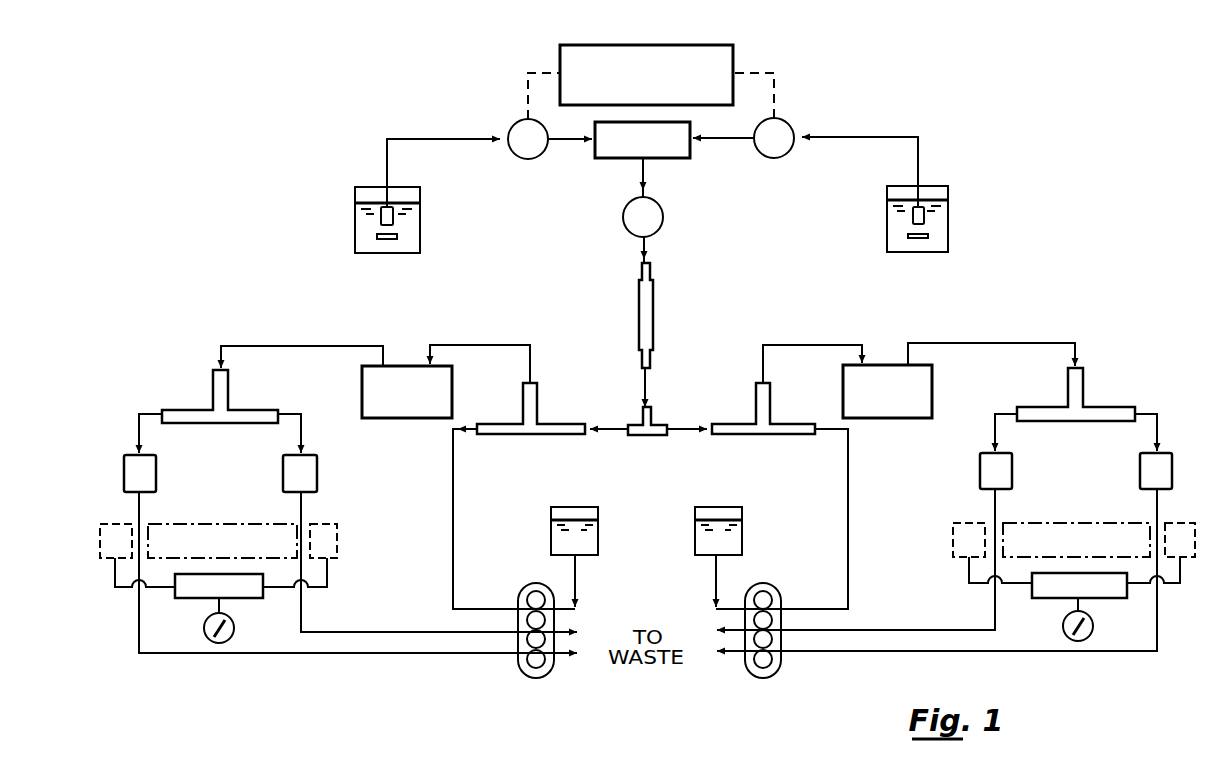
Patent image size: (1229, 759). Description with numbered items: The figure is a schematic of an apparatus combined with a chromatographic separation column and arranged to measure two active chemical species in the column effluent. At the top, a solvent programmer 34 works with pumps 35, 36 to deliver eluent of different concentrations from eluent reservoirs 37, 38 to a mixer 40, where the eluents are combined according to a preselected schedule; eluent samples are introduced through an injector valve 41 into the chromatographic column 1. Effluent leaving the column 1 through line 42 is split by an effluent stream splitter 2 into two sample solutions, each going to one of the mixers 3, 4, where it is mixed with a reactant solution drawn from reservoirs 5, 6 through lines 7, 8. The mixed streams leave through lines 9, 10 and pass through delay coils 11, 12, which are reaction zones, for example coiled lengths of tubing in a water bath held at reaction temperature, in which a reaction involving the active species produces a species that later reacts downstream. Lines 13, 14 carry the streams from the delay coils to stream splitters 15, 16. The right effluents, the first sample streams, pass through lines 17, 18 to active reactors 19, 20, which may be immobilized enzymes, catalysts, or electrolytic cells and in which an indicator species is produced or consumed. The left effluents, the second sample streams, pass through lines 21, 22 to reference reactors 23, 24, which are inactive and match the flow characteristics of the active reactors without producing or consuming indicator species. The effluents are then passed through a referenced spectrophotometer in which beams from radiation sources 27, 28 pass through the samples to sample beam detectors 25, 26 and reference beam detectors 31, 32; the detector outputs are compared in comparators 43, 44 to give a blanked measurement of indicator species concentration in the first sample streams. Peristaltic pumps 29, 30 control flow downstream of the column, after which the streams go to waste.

The chromatographic column 1 is at (654, 314).
The effluent stream splitter 2 is at (652, 418).
The mixer 3 is at (538, 396).
The mixer 4 is at (771, 396).
The reservoir 5 is at (583, 505).
The reservoir 6 is at (723, 506).
The line 7 is at (454, 487).
The line 8 is at (848, 490).
The line 9 is at (470, 345).
The line 10 is at (793, 345).
The delay coil 11 is at (360, 380).
The delay coil 12 is at (933, 375).
The line 13 is at (290, 345).
The line 14 is at (975, 342).
The stream splitter 15 is at (212, 383).
The stream splitter 16 is at (1085, 380).
The line 17 is at (302, 431).
The line 18 is at (1158, 420).
The active reactor 19 is at (318, 473).
The active reactor 20 is at (1172, 468).
The line 21 is at (147, 413).
The line 22 is at (994, 414).
The reference reactor 23 is at (122, 467).
The reference reactor 24 is at (979, 467).
The sample beam detector 25 is at (337, 538).
The sample beam detector 26 is at (1190, 522).
The radiation source 27 is at (202, 523).
The radiation source 28 is at (1062, 522).
The peristaltic pump 29 is at (543, 677).
The peristaltic pump 30 is at (773, 673).
The reference beam detector 31 is at (100, 540).
The reference beam detector 32 is at (953, 542).
The solvent programmer 34 is at (735, 52).
The pump 35 is at (514, 124).
The pump 36 is at (789, 125).
The eluent reservoir 37 is at (355, 210).
The eluent reservoir 38 is at (948, 220).
The mixer 40 is at (683, 158).
The injector valve 41 is at (663, 217).
The line 42 is at (647, 377).
The comparator 43 is at (258, 599).
The comparator 44 is at (1122, 600).